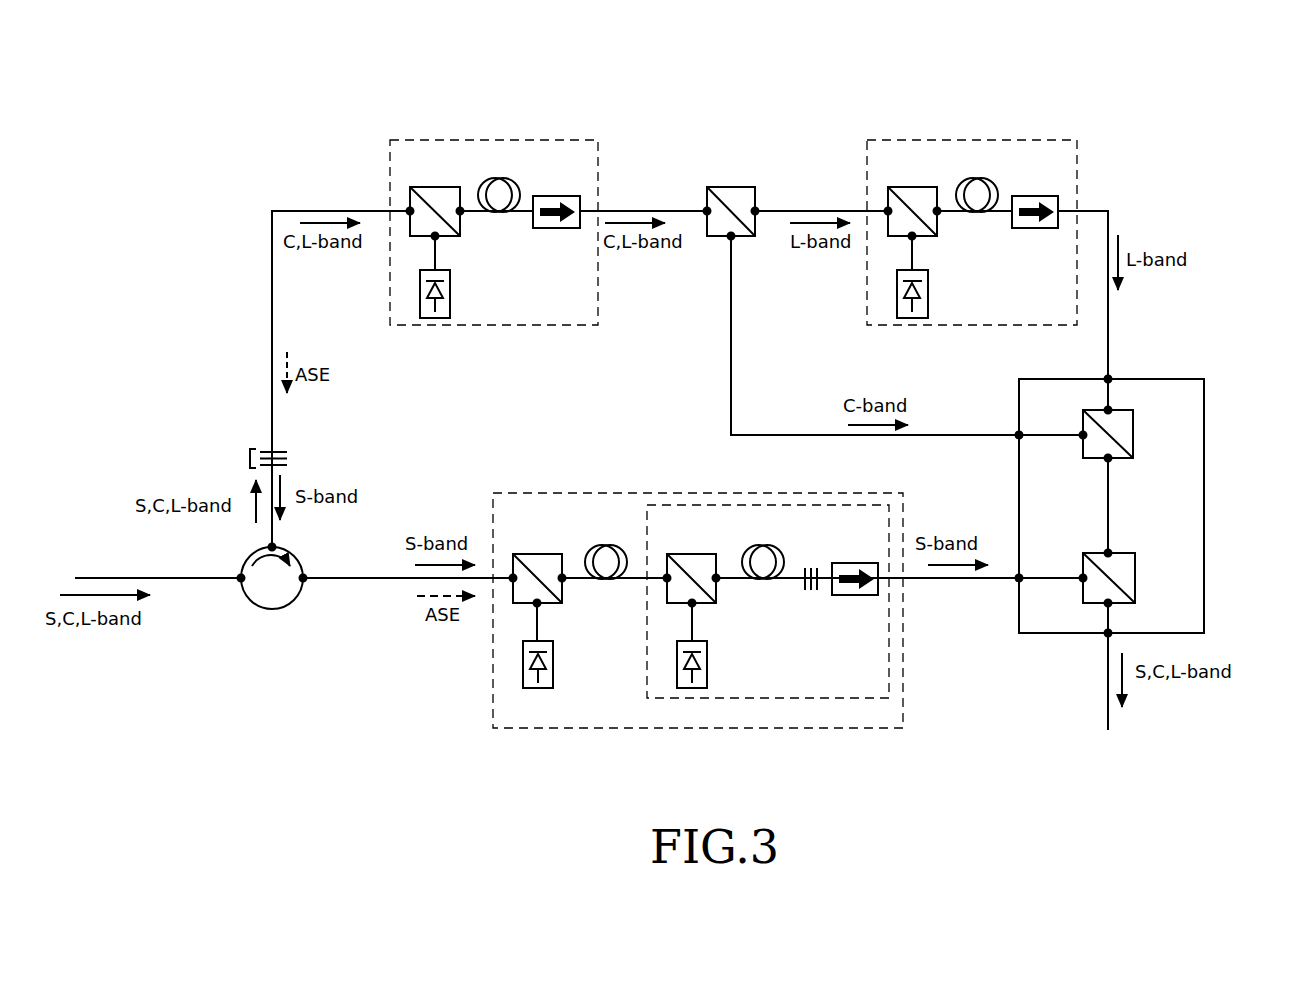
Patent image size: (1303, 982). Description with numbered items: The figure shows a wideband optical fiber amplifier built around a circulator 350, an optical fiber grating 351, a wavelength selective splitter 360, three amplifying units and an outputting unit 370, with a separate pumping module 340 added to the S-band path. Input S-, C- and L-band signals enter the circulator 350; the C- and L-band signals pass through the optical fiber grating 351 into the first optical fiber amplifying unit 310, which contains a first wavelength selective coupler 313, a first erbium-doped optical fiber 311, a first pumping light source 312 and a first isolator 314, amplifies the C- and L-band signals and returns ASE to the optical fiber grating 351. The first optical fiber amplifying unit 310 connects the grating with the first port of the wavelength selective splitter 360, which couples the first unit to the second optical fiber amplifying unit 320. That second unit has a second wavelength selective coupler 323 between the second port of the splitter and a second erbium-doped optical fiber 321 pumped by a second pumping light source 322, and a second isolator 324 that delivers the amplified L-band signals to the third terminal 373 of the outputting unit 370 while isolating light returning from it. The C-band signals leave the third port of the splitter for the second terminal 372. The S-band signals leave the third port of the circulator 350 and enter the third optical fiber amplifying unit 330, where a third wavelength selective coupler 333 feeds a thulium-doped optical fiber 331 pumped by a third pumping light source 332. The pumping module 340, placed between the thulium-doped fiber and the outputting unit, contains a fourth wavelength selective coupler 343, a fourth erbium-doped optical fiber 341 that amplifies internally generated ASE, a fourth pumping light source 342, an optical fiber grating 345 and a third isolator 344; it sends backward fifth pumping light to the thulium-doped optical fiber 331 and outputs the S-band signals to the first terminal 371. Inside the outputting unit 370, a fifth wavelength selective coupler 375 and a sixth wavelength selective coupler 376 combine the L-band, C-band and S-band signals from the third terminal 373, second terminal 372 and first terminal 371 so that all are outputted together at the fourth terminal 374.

The first optical fiber amplifying unit 310 is at (492, 114).
The first erbium-doped optical fiber 311 is at (504, 213).
The first pumping light source 312 is at (450, 294).
The first wavelength selective coupler 313 is at (436, 186).
The first isolator 314 is at (555, 194).
The second optical fiber amplifying unit 320 is at (968, 114).
The second erbium-doped optical fiber 321 is at (981, 213).
The second pumping light source 322 is at (928, 294).
The second wavelength selective coupler 323 is at (914, 186).
The second isolator 324 is at (1033, 194).
The third optical fiber amplifying unit 330 is at (595, 481).
The thulium-doped optical fiber 331 is at (607, 580).
The third pumping light source 332 is at (553, 661).
The third wavelength selective coupler 333 is at (539, 553).
The pumping module 340 is at (768, 601).
The fourth erbium-doped optical fiber 341 is at (764, 580).
The fourth pumping light source 342 is at (707, 661).
The fourth wavelength selective coupler 343 is at (694, 553).
The third isolator 344 is at (855, 561).
The optical fiber grating 345 is at (811, 592).
The circulator 350 is at (272, 609).
The optical fiber grating 351 is at (247, 461).
The wavelength selective splitter 360 is at (738, 160).
The outputting unit 370 is at (1218, 412).
The first terminal 371 is at (1018, 579).
The second terminal 372 is at (1018, 436).
The third terminal 373 is at (1109, 379).
The fourth terminal 374 is at (1107, 634).
The fifth wavelength selective coupler 375 is at (1134, 436).
The sixth wavelength selective coupler 376 is at (1136, 580).